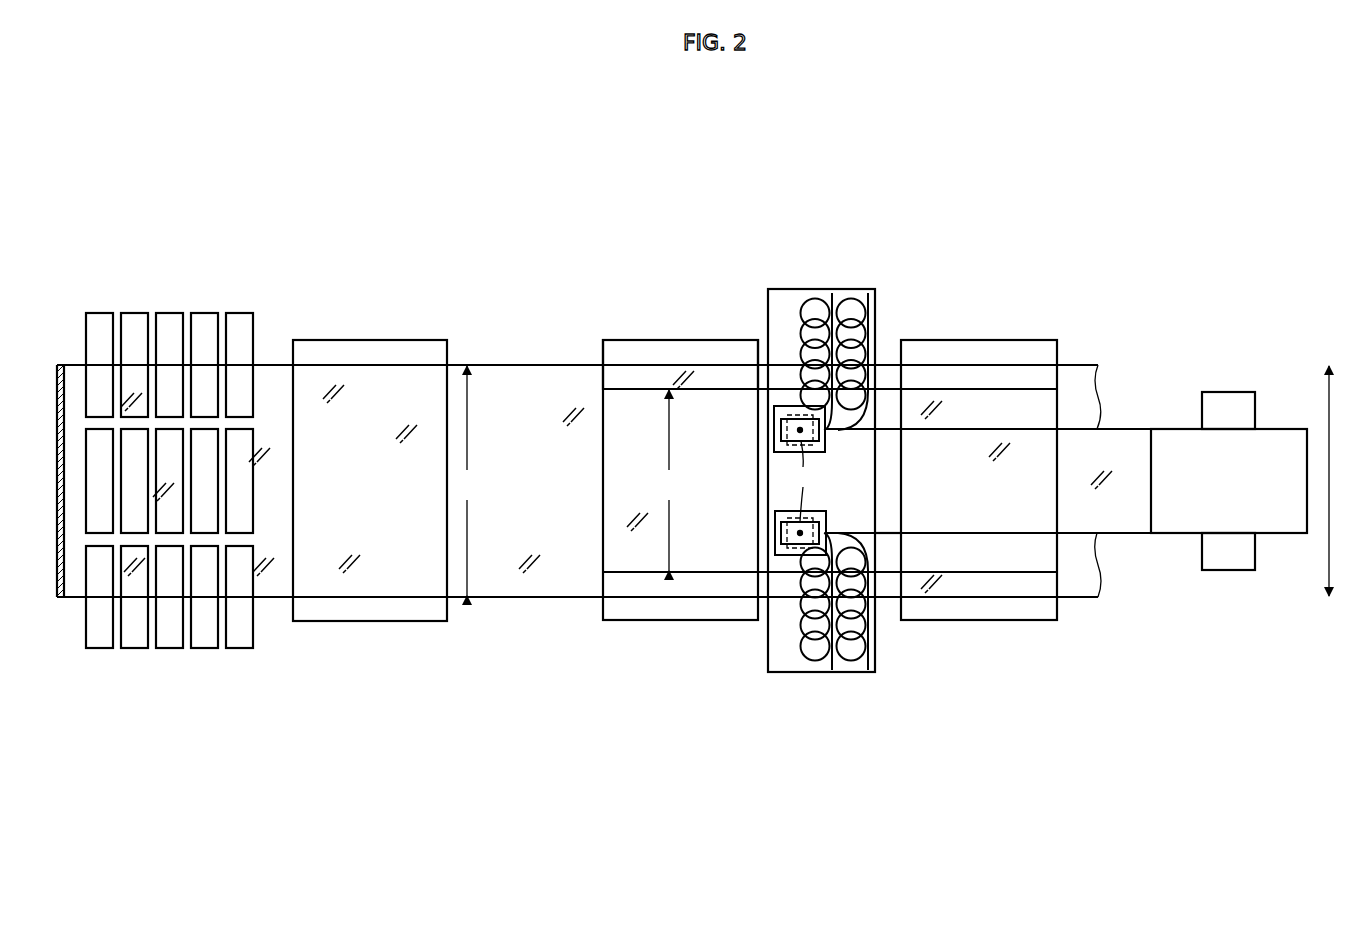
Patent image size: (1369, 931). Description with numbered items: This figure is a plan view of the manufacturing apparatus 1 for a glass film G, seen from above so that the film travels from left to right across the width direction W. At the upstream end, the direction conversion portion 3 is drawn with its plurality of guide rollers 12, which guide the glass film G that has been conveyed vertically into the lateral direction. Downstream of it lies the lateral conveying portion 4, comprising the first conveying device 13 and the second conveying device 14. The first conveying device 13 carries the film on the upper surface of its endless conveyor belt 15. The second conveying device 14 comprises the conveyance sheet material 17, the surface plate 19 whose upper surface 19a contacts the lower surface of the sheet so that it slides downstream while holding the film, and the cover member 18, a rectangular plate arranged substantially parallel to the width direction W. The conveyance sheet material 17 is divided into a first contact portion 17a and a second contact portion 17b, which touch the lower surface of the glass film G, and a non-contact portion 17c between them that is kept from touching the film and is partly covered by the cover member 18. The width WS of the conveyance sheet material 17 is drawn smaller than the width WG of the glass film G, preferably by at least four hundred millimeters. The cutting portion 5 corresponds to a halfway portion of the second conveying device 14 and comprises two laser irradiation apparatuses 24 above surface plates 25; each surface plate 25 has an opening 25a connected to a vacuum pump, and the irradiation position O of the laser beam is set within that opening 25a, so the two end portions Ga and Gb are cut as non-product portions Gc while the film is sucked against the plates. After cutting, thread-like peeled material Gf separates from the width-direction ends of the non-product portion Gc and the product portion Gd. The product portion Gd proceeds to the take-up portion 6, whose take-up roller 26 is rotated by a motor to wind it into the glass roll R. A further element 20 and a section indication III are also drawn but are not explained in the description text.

The manufacturing apparatus 1 is at (1033, 175).
The direction conversion portion 3 is at (169, 527).
The lateral conveying portion 4 is at (682, 510).
The cutting portion 5 is at (787, 437).
The take-up portion 6 is at (1252, 449).
The guide rollers 12 is at (98, 649).
The first conveying device 13 is at (342, 642).
The second conveying device 14 is at (694, 637).
The conveyor belt 15 is at (384, 622).
The conveyance sheet material 17 is at (632, 389).
The first contact portion 17a is at (648, 538).
The second contact portion 17b is at (970, 420).
The non-contact portion 17c is at (884, 563).
The cover member 18 is at (771, 674).
The surface plate 19 is at (668, 335).
The upper surface 19a is at (700, 356).
The third conveyor 20 is at (972, 621).
The laser irradiation apparatus 24 is at (790, 445).
The surface plate 25 is at (762, 484).
The opening 25a is at (781, 428).
The take-up roller 26 is at (1230, 557).
The glass film G is at (522, 392).
The end portion Ga is at (483, 599).
The end portion Gb is at (484, 363).
The non-product portion Gc is at (1075, 378).
The product portion Gd is at (1128, 444).
The thread-like peeled material Gf is at (814, 298).
The irradiation position O is at (803, 482).
The glass roll R is at (1175, 515).
The width direction W is at (1341, 481).
The width of the glass film WG is at (466, 481).
The width of the conveyance sheet material WS is at (669, 480).
The section line III is at (888, 508).